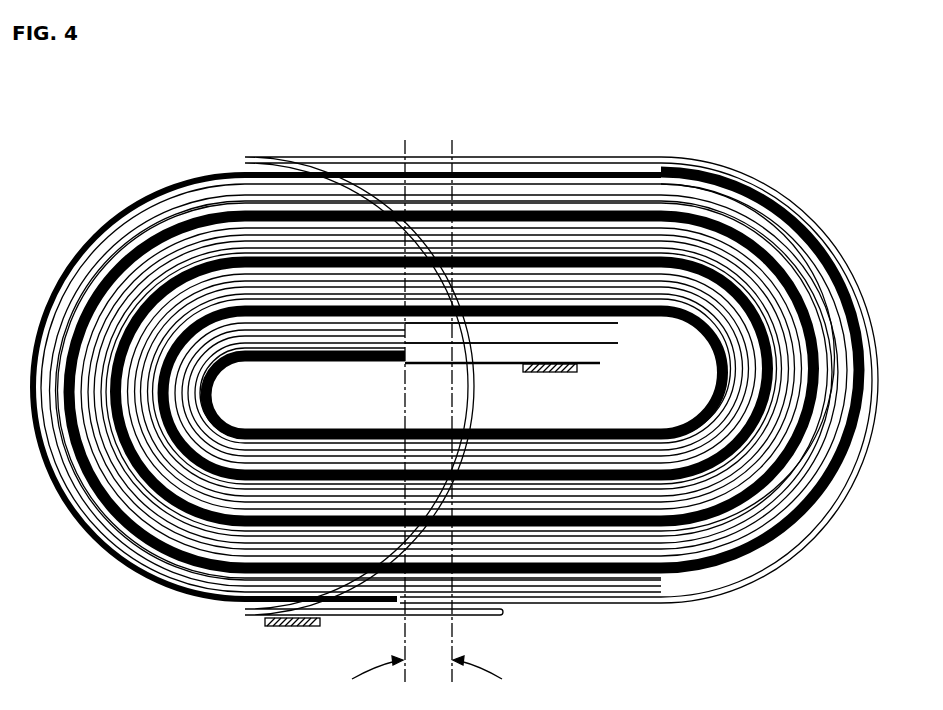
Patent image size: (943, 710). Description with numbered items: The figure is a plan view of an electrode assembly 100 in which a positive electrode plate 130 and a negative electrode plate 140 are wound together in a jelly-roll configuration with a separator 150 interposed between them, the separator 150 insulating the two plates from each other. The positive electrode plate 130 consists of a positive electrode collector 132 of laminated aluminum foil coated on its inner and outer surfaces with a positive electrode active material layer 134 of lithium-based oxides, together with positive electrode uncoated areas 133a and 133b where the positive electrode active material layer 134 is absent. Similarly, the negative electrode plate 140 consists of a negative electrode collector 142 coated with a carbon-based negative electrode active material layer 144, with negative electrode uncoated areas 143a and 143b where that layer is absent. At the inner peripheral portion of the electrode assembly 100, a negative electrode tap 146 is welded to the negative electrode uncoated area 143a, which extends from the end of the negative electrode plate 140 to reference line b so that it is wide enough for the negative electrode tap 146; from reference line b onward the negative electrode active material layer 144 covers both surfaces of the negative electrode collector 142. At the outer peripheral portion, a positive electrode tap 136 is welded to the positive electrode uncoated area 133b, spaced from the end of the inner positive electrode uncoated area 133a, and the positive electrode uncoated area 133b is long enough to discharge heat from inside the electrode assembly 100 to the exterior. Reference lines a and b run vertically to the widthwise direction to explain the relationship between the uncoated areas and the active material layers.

The electrode assembly 100 is at (748, 152).
The positive electrode plate 130 is at (552, 190).
The positive electrode collector 132 is at (607, 196).
The positive electrode uncoated area 133a is at (478, 333).
The positive electrode uncoated area 133b is at (505, 183).
The positive electrode active material layer 134 is at (668, 208).
The positive electrode tap 136 is at (265, 622).
The negative electrode plate 140 is at (395, 172).
The negative electrode collector 142 is at (430, 182).
The negative electrode uncoated area 143a is at (582, 362).
The negative electrode uncoated area 143b is at (325, 170).
The negative electrode active material layer 144 is at (480, 200).
The negative electrode tap 146 is at (583, 369).
The separator 150 is at (236, 178).